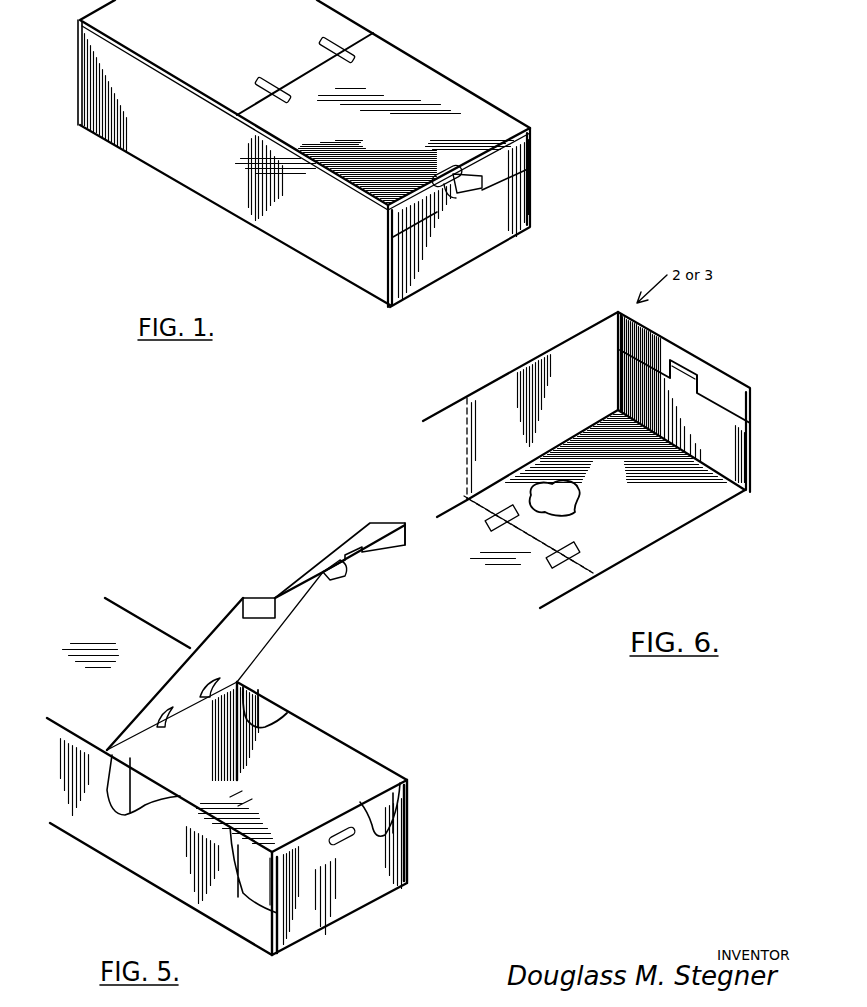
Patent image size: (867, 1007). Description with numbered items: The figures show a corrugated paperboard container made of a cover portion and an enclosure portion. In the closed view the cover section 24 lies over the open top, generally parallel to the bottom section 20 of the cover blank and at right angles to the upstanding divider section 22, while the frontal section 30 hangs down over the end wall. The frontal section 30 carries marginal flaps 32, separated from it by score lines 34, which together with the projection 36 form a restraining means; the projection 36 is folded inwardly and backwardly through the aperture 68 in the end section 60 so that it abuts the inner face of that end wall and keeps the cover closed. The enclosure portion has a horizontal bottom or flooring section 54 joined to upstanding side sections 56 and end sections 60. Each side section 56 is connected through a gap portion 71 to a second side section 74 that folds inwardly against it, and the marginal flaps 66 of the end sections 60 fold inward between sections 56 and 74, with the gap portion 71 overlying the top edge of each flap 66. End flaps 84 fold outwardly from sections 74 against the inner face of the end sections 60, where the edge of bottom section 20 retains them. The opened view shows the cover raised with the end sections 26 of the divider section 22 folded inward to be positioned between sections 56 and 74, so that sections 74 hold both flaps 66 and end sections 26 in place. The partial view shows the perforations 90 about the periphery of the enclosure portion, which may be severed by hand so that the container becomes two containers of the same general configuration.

In FIG. 6, the third section 20 is at (557, 503).
In FIG. 5, the third section 20 is at (247, 817).
In FIG. 5, the first section 22 is at (197, 729).
In FIG. 1, the second section 24 is at (304, 105).
In FIG. 5, the second section 24 is at (252, 642).
In FIG. 5, the end sections 26 is at (118, 785).
In FIG. 1, the frontal section 30 is at (488, 208).
In FIG. 6, the frontal section 30 is at (718, 382).
In FIG. 5, the frontal section 30 is at (367, 535).
In FIG. 5, the marginal flaps 32 is at (263, 608).
In FIG. 5, the score lines 34 is at (388, 543).
In FIG. 1, the projection 36 is at (458, 192).
In FIG. 5, the projection 36 is at (337, 568).
In FIG. 6, the bottom or flooring section 54 is at (571, 498).
In FIG. 1, the first upstanding side sections 56 is at (236, 171).
In FIG. 6, the first upstanding side sections 56 is at (522, 414).
In FIG. 5, the first upstanding side sections 56 is at (142, 860).
In FIG. 1, the upstanding end sections 60 is at (510, 152).
In FIG. 6, the upstanding end sections 60 is at (723, 435).
In FIG. 5, the upstanding end sections 60 is at (363, 888).
In FIG. 5, the marginal or side flaps 66 is at (265, 882).
In FIG. 1, the aperture 68 is at (448, 200).
In FIG. 5, the aperture 68 is at (348, 844).
In FIG. 5, the gap portion 71 is at (328, 730).
In FIG. 5, the second side sections 74 is at (238, 863).
In FIG. 5, the end flaps 84 is at (378, 808).
In FIG. 6, the perforations 90 is at (522, 537).